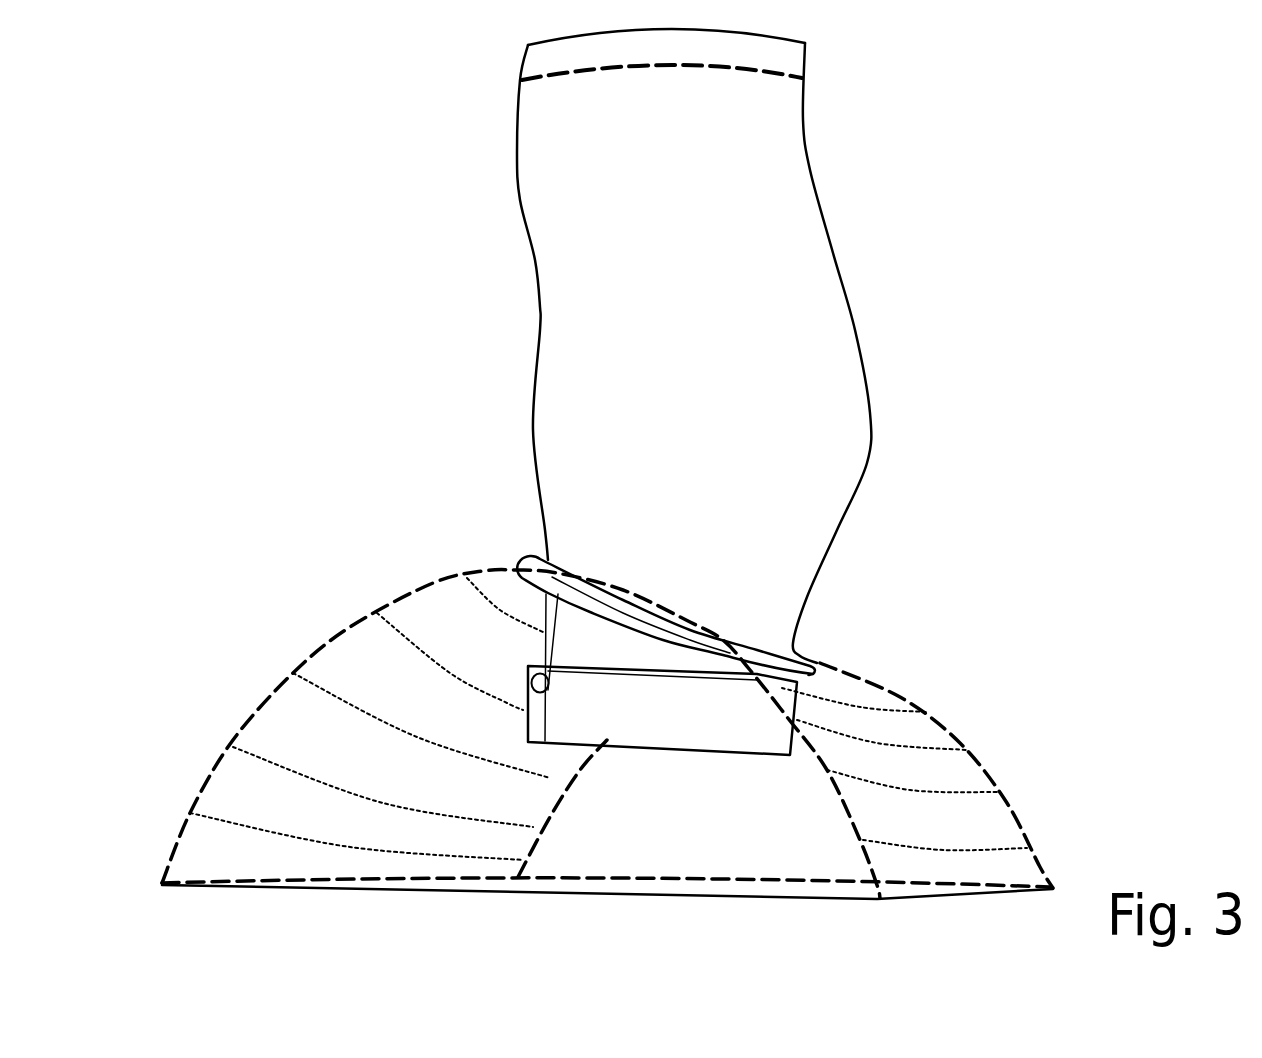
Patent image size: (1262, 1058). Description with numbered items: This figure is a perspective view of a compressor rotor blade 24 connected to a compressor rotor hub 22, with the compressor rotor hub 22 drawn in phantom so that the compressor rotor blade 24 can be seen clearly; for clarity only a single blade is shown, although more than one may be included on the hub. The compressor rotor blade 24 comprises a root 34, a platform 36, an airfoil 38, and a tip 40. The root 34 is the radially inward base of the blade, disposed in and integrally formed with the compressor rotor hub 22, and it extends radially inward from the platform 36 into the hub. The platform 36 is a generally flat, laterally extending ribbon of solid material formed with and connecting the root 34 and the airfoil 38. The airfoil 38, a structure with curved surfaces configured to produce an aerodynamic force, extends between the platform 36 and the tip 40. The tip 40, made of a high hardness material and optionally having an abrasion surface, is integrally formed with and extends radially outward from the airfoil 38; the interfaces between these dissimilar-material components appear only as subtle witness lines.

The compressor rotor hub 22 is at (350, 620).
The compressor rotor blade 24 is at (662, 392).
The root 34 is at (528, 695).
The platform 36 is at (768, 648).
The airfoil 38 is at (577, 158).
The tip 40 is at (805, 55).